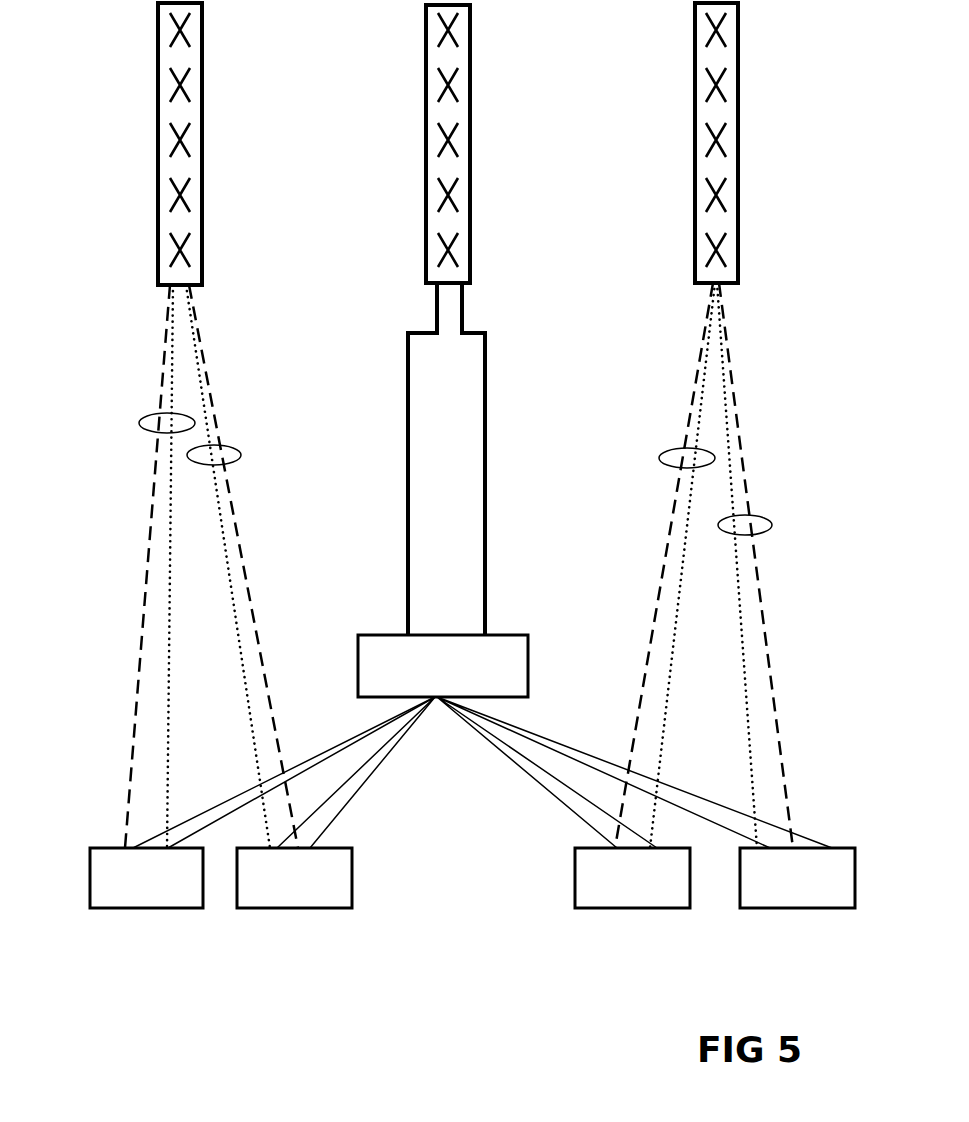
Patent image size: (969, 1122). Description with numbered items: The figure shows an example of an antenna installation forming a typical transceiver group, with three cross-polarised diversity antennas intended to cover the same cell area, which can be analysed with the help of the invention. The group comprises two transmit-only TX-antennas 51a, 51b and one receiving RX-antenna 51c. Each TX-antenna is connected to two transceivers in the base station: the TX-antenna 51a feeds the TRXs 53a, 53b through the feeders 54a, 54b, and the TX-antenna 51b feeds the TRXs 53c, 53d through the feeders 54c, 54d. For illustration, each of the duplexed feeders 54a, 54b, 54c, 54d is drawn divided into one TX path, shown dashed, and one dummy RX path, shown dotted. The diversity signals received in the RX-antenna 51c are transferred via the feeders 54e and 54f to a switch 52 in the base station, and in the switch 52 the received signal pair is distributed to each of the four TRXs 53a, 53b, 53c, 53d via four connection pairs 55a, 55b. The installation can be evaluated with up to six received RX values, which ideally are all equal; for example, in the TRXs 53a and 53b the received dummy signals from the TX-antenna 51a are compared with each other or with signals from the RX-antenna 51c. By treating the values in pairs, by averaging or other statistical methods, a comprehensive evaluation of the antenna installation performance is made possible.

The TX-antenna 51a is at (158, 208).
The TX-antenna 51b is at (695, 190).
The RX-antenna 51c is at (427, 208).
The switch 52 is at (358, 640).
The TRX 53a is at (158, 908).
The TRX 53b is at (290, 908).
The TRX 53c is at (638, 908).
The TRX 53d is at (775, 908).
The feeder 54a is at (140, 418).
The feeder 54b is at (237, 456).
The feeder 54c is at (664, 450).
The feeder 54d is at (770, 527).
The feeder 54e is at (408, 440).
The feeder 54f is at (485, 480).
The connection pair 55a is at (393, 743).
The connection pair 55b is at (355, 770).